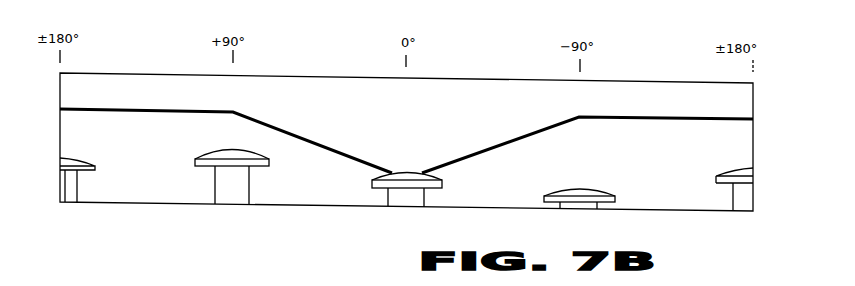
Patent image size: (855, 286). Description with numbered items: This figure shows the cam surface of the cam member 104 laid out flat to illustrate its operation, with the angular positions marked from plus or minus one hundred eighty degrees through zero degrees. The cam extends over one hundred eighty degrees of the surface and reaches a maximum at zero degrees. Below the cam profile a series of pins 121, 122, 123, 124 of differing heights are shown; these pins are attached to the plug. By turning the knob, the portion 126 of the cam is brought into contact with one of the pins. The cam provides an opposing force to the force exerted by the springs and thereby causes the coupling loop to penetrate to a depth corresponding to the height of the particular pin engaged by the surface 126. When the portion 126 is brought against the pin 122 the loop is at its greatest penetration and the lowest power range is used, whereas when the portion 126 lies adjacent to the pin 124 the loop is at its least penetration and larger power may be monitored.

The cam member 104 is at (345, 133).
The portion of the cam 126 is at (468, 158).
The pin 121 is at (408, 198).
The pin 122 is at (232, 195).
The pin 123 is at (69, 192).
The pin 124 is at (582, 207).